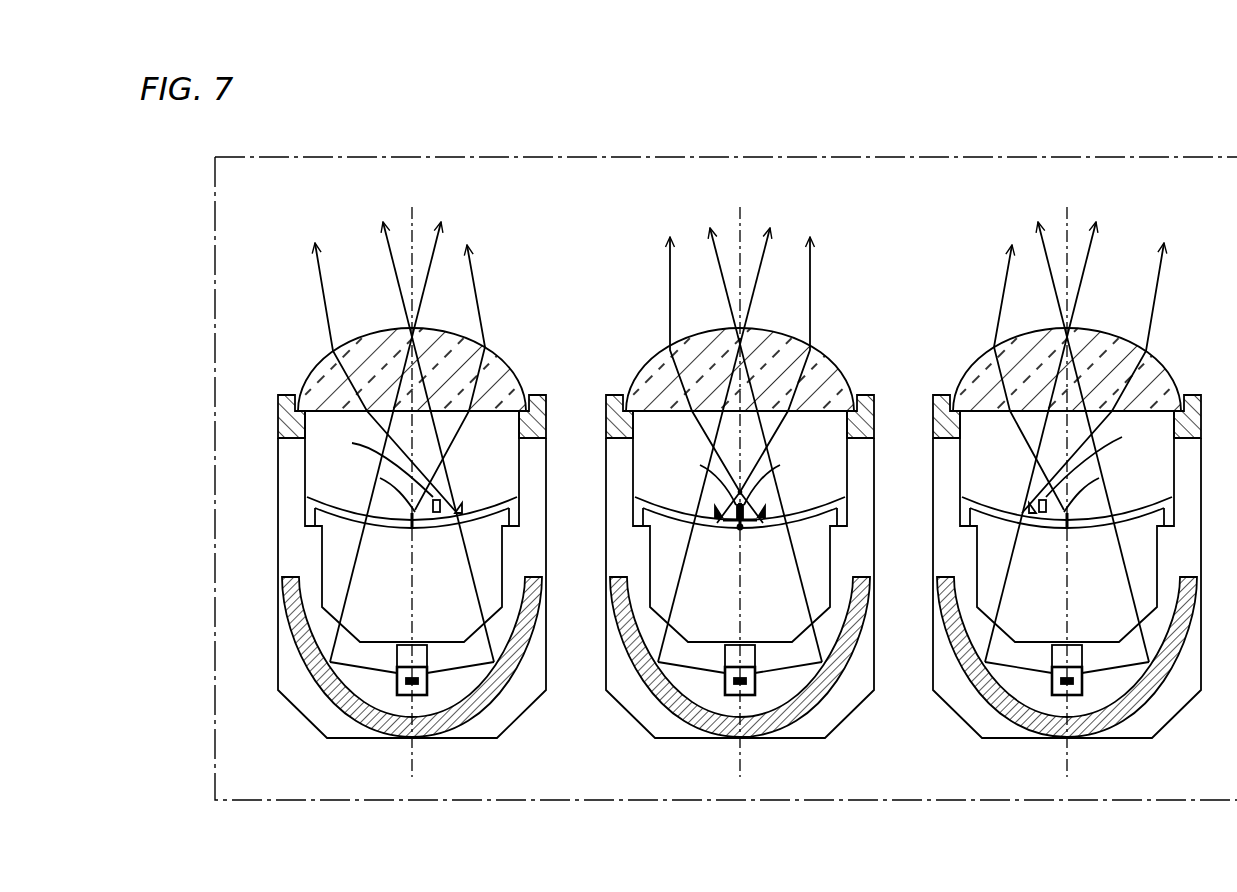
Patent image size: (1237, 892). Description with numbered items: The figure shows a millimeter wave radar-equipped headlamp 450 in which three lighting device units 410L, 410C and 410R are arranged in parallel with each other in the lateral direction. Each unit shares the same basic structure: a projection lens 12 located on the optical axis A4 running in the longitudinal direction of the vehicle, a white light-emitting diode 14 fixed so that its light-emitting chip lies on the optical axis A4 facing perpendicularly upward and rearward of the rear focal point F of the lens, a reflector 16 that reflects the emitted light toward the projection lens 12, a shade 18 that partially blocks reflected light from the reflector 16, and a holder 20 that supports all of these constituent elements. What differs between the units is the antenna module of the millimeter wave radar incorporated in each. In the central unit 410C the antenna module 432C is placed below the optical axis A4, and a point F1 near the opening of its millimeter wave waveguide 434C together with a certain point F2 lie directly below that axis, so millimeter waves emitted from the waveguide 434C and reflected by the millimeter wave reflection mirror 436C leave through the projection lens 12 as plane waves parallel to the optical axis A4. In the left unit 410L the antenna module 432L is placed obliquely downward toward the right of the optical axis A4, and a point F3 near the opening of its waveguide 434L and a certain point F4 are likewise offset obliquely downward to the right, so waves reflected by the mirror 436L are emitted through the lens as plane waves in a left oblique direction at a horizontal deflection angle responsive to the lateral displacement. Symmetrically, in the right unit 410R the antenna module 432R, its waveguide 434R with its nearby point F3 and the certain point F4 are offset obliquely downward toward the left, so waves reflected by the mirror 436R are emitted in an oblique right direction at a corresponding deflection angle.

The millimeter wave radar-equipped headlamp 450 is at (1136, 157).
The lighting device unit 410L is at (290, 228).
The lighting device unit 410C is at (704, 474).
The lighting device unit 410R is at (950, 228).
The projection lens 12 is at (750, 364).
The white light-emitting diode 14 is at (763, 697).
The reflector 16 is at (717, 657).
The shade 18 is at (769, 538).
The holder 20 is at (740, 612).
The optical axis A4 is at (777, 478).
The antenna module 432L is at (327, 478).
The millimeter wave waveguide 434L is at (422, 489).
The millimeter wave reflection mirror 436L is at (412, 513).
The antenna module 432C is at (693, 473).
The millimeter wave waveguide 434C is at (726, 499).
The millimeter wave reflection mirror 436C is at (731, 528).
The antenna module 432R is at (1126, 428).
The millimeter wave waveguide 434R is at (1057, 488).
The millimeter wave reflection mirror 436R is at (1067, 513).
The rear focal point F is at (410, 529).
The point F1 is at (752, 503).
The point F2 is at (747, 488).
The point F3 is at (437, 515).
The point F4 is at (440, 484).